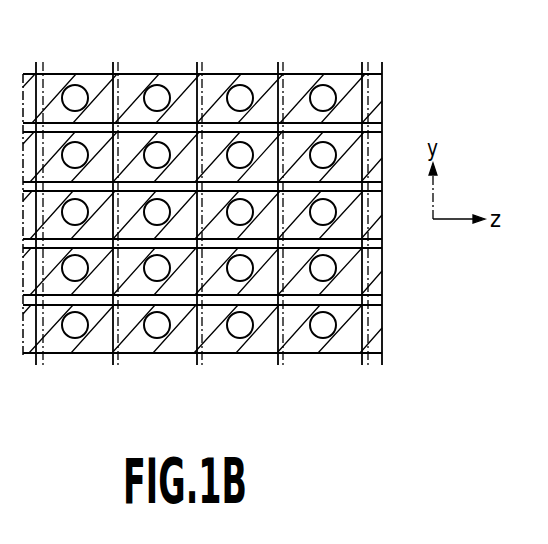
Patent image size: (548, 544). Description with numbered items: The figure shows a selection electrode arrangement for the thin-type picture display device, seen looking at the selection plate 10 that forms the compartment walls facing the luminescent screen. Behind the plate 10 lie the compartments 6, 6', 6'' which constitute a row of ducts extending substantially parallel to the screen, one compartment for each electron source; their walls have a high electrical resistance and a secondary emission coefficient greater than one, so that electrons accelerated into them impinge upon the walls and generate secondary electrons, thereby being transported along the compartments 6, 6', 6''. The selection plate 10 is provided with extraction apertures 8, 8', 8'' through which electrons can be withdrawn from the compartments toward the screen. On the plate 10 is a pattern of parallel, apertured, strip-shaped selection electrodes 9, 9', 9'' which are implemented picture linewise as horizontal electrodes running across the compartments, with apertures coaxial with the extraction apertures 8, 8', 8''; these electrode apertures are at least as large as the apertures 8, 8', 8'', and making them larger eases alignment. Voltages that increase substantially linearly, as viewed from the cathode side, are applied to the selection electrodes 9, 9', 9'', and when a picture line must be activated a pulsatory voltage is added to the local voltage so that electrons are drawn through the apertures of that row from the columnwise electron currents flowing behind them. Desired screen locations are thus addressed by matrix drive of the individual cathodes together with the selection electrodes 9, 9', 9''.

The compartment 6 is at (56, 201).
The compartment 6' is at (138, 201).
The compartment 6'' is at (223, 201).
The extraction aperture 8 is at (363, 217).
The extraction aperture 8' is at (366, 276).
The extraction aperture 8'' is at (369, 332).
The selection electrode 9 is at (220, 213).
The selection electrode 9' is at (239, 269).
The selection electrode 9'' is at (242, 323).
The selection plate 10 is at (368, 129).